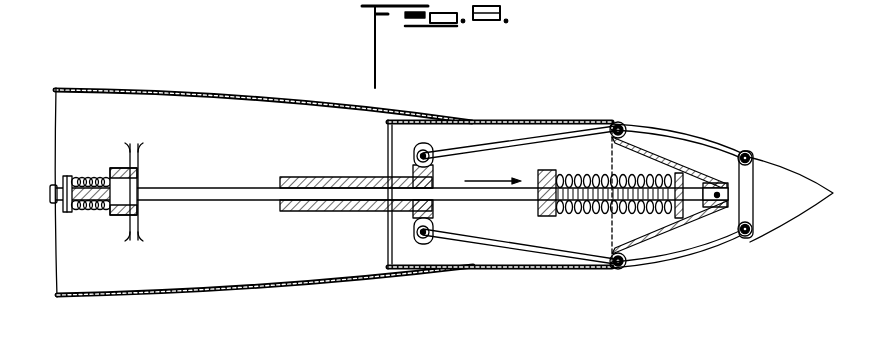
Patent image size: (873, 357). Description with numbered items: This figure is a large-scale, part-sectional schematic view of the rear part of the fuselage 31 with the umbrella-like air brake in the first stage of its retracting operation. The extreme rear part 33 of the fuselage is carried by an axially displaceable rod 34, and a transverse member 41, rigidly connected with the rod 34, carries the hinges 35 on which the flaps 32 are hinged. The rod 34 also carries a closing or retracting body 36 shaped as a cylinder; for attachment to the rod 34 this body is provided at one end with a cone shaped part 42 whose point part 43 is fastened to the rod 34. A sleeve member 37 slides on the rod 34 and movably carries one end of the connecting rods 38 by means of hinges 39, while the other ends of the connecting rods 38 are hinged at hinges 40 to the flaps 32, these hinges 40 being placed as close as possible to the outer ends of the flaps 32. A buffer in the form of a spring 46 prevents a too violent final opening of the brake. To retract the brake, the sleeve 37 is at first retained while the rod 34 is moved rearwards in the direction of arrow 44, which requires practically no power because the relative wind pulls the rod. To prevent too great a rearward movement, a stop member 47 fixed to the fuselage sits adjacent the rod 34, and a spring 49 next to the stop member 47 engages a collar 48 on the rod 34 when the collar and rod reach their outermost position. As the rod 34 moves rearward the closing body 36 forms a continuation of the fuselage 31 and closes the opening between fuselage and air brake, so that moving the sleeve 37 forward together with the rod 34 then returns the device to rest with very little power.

The fuselage 31 is at (358, 282).
The flaps 32 is at (680, 262).
The rear part of the fuselage 33 is at (784, 177).
The rod 34 is at (222, 200).
The hinges 35 is at (747, 155).
The closing or retracting body 36 is at (487, 270).
The sleeve member 37 is at (300, 213).
The connecting rods 38 is at (538, 255).
The hinges 39 is at (423, 240).
The hinges 40 is at (620, 126).
The transverse member 41 is at (745, 200).
The cone shaped part 42 is at (650, 150).
The point part 43 is at (714, 183).
The arrow 44 is at (493, 171).
The spring 46 is at (590, 205).
The stop member 47 is at (136, 176).
The collar 48 is at (68, 177).
The spring 49 is at (96, 207).